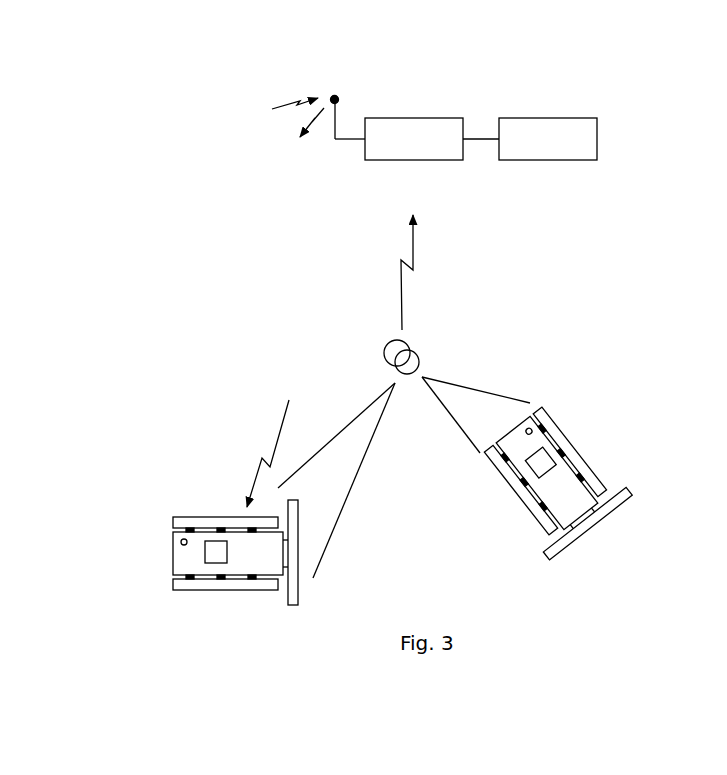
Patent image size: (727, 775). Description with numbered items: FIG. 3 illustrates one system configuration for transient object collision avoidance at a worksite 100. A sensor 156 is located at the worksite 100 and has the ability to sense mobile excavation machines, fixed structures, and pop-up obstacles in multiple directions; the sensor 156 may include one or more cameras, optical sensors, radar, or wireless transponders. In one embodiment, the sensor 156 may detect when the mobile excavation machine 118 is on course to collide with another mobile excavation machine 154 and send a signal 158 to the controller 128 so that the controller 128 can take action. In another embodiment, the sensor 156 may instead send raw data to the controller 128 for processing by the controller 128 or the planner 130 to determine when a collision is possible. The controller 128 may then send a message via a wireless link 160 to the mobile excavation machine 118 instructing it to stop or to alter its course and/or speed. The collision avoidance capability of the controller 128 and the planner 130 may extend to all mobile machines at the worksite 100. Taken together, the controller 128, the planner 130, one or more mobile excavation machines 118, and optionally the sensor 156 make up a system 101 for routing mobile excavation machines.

The worksite 100 is at (457, 42).
The system for routing mobile excavation machines 101 is at (137, 212).
The controller 128 is at (412, 113).
The planner 130 is at (538, 113).
The sensor 156 is at (390, 342).
The signal 158 is at (412, 250).
The wireless link 160 is at (278, 428).
The mobile excavation machine 118 is at (213, 590).
The another mobile excavation machine 154 is at (580, 453).